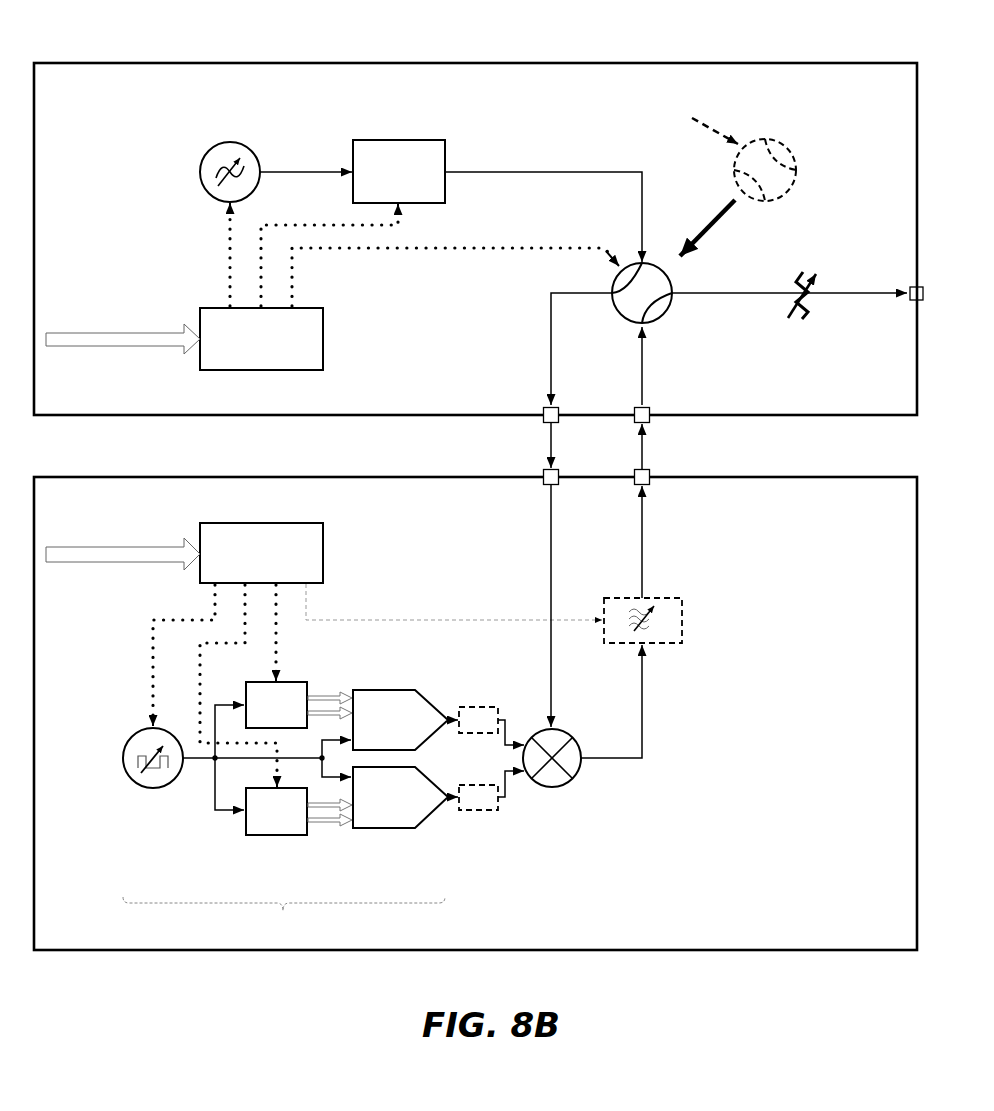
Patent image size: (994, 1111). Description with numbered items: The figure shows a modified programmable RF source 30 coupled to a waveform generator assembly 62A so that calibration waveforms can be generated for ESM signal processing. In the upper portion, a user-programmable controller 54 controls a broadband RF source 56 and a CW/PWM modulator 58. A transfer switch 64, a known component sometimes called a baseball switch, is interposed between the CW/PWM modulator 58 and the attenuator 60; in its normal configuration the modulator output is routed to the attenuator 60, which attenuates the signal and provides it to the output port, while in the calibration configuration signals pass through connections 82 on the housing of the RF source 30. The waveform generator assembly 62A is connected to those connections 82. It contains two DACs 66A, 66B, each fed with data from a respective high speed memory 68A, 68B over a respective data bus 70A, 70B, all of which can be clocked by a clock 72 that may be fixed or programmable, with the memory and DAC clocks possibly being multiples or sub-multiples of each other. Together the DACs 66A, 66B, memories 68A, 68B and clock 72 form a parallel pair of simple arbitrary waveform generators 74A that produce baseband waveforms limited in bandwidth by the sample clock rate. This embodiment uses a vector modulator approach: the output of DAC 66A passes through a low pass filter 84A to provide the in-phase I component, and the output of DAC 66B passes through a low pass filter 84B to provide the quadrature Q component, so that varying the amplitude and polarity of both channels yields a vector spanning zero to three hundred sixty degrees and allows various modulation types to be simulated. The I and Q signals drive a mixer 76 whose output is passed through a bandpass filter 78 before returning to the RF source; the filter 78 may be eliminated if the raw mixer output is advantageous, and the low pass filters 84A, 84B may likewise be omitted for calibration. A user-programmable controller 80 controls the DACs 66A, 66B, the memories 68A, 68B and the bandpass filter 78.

The programmable RF source 30 is at (460, 61).
The user-programmable controller 54 is at (325, 307).
The broadband RF source 56 is at (263, 156).
The CW/PWM modulator 58 is at (447, 155).
The attenuator 60 is at (829, 260).
The waveform generator assembly 62A is at (751, 953).
The transfer switch 64 is at (658, 261).
The DAC 66A is at (431, 705).
The DAC 66B is at (431, 813).
The high speed memory 68A is at (310, 681).
The high speed memory 68B is at (311, 838).
The data bus 70A is at (331, 693).
The data bus 70B is at (331, 822).
The clock 72 is at (128, 738).
The arbitrary waveform generators 74A is at (284, 919).
The mixer 76 is at (581, 740).
The bandpass filter 78 is at (685, 598).
The user-programmable controller 80 is at (325, 522).
The connections 82 is at (633, 426).
The low pass filter 84A is at (498, 706).
The low pass filter 84B is at (498, 812).